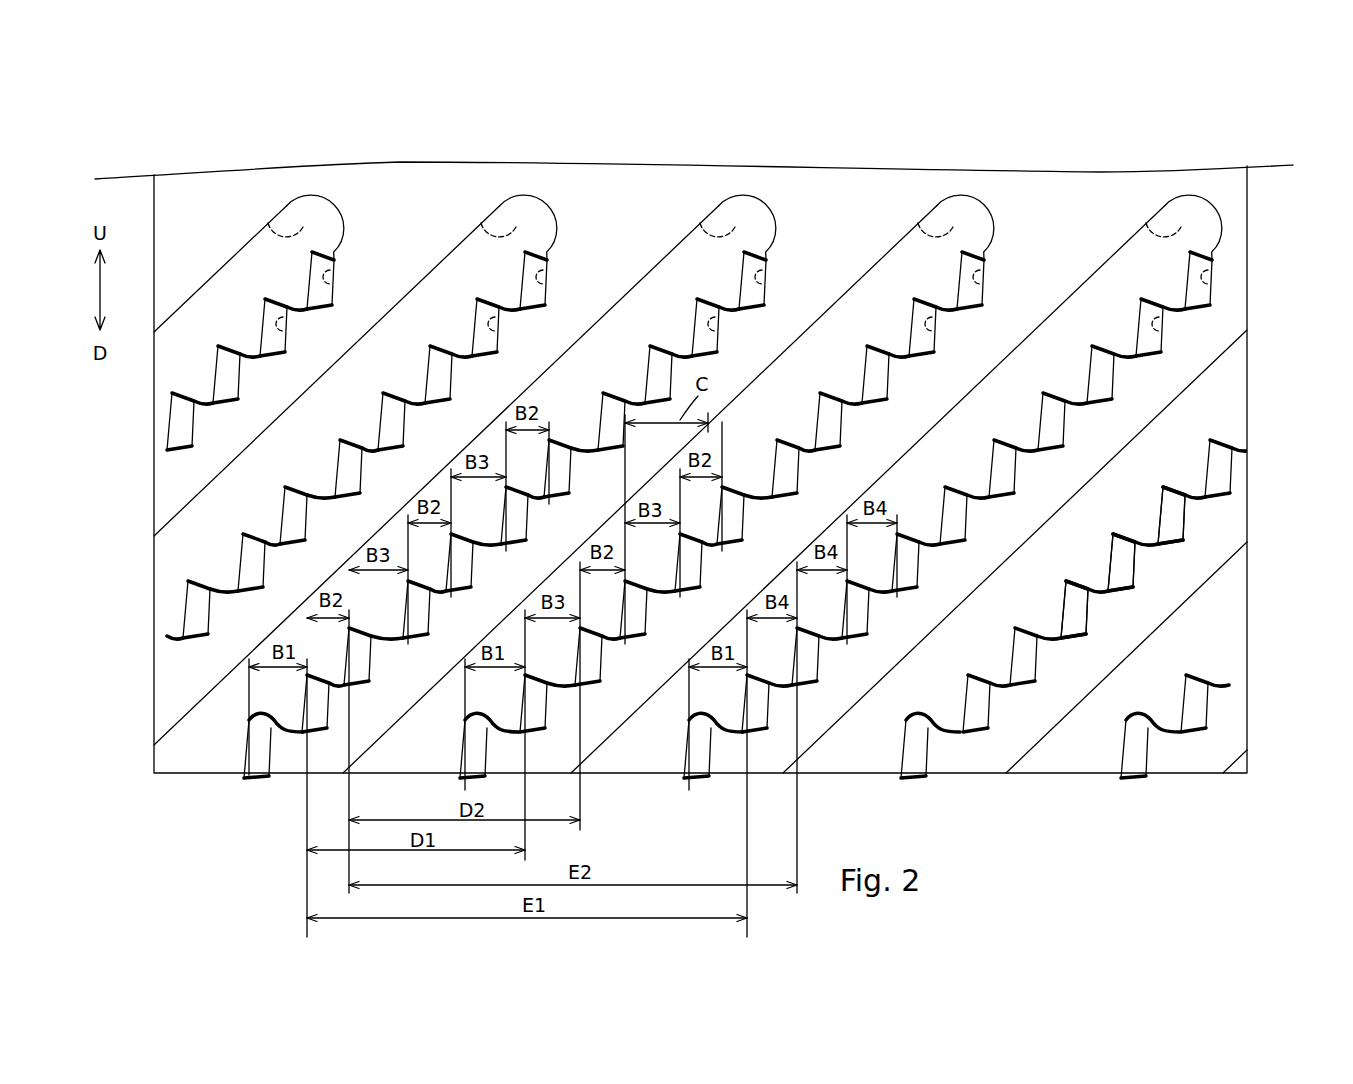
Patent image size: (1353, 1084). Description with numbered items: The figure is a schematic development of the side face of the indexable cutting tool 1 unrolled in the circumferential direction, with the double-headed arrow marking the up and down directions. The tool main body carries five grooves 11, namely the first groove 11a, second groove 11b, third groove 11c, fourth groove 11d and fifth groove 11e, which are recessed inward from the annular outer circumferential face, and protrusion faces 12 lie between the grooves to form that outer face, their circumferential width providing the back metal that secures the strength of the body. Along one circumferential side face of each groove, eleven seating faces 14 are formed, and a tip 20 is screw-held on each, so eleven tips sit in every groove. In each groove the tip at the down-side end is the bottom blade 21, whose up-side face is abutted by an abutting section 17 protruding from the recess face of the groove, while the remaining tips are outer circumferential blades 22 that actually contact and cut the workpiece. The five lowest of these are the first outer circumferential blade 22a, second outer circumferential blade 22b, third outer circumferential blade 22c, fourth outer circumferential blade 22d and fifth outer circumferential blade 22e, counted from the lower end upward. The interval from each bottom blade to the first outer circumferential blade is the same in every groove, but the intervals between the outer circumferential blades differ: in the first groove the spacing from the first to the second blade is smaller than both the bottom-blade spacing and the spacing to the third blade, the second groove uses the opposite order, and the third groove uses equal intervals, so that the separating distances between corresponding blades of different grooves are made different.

The indexable cutting tool 1 is at (1272, 112).
The grooves 11 is at (698, 432).
The first groove 11a is at (720, 230).
The second groove 11b is at (950, 230).
The third groove 11c is at (1173, 222).
The fourth groove 11d is at (303, 226).
The fifth groove 11e is at (515, 230).
The protrusion faces 12 is at (418, 413).
The seating faces 14 is at (282, 316).
The abutting section 17 is at (250, 720).
The tips 20 is at (222, 284).
The bottom blade 21 is at (252, 778).
The outer circumferential blades 22 is at (698, 432).
The first outer circumferential blade 22a is at (322, 705).
The second outer circumferential blade 22b is at (372, 652).
The third outer circumferential blade 22c is at (430, 600).
The fourth outer circumferential blade 22d is at (470, 553).
The fifth outer circumferential blade 22e is at (517, 508).